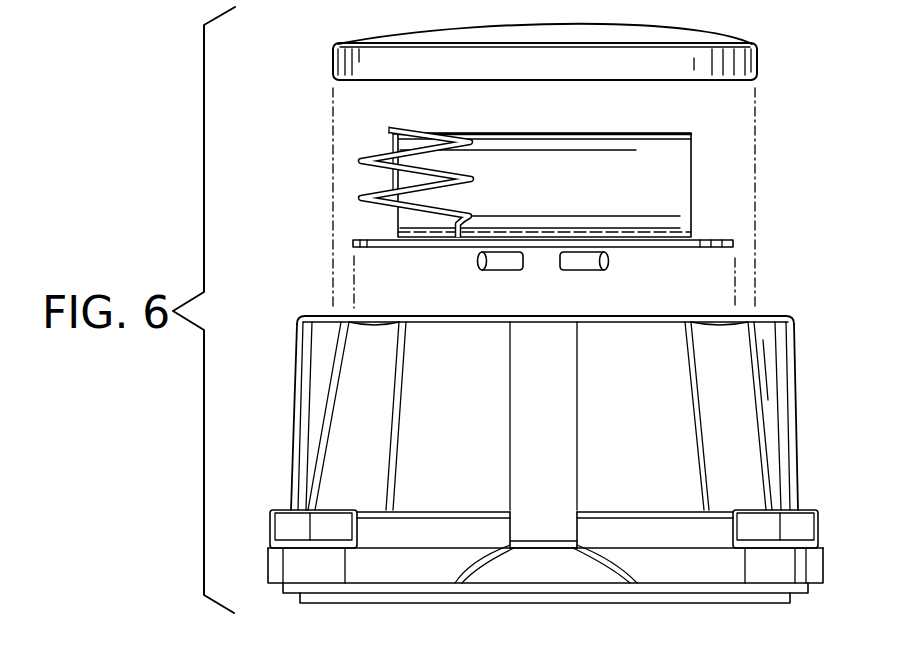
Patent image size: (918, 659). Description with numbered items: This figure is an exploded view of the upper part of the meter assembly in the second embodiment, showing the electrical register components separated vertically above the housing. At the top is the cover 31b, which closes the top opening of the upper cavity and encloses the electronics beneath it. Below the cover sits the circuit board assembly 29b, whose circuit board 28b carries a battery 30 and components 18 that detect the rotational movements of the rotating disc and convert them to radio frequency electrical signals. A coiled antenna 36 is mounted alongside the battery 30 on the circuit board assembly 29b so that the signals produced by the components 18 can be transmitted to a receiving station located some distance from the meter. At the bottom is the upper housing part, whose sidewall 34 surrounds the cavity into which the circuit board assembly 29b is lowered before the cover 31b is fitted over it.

The components 18 is at (585, 272).
The circuit board 28b is at (733, 244).
The circuit board assembly 29b is at (728, 208).
The battery 30 is at (573, 133).
The cover 31b is at (655, 30).
The sidewall 34 is at (656, 428).
The antenna 36 is at (400, 127).